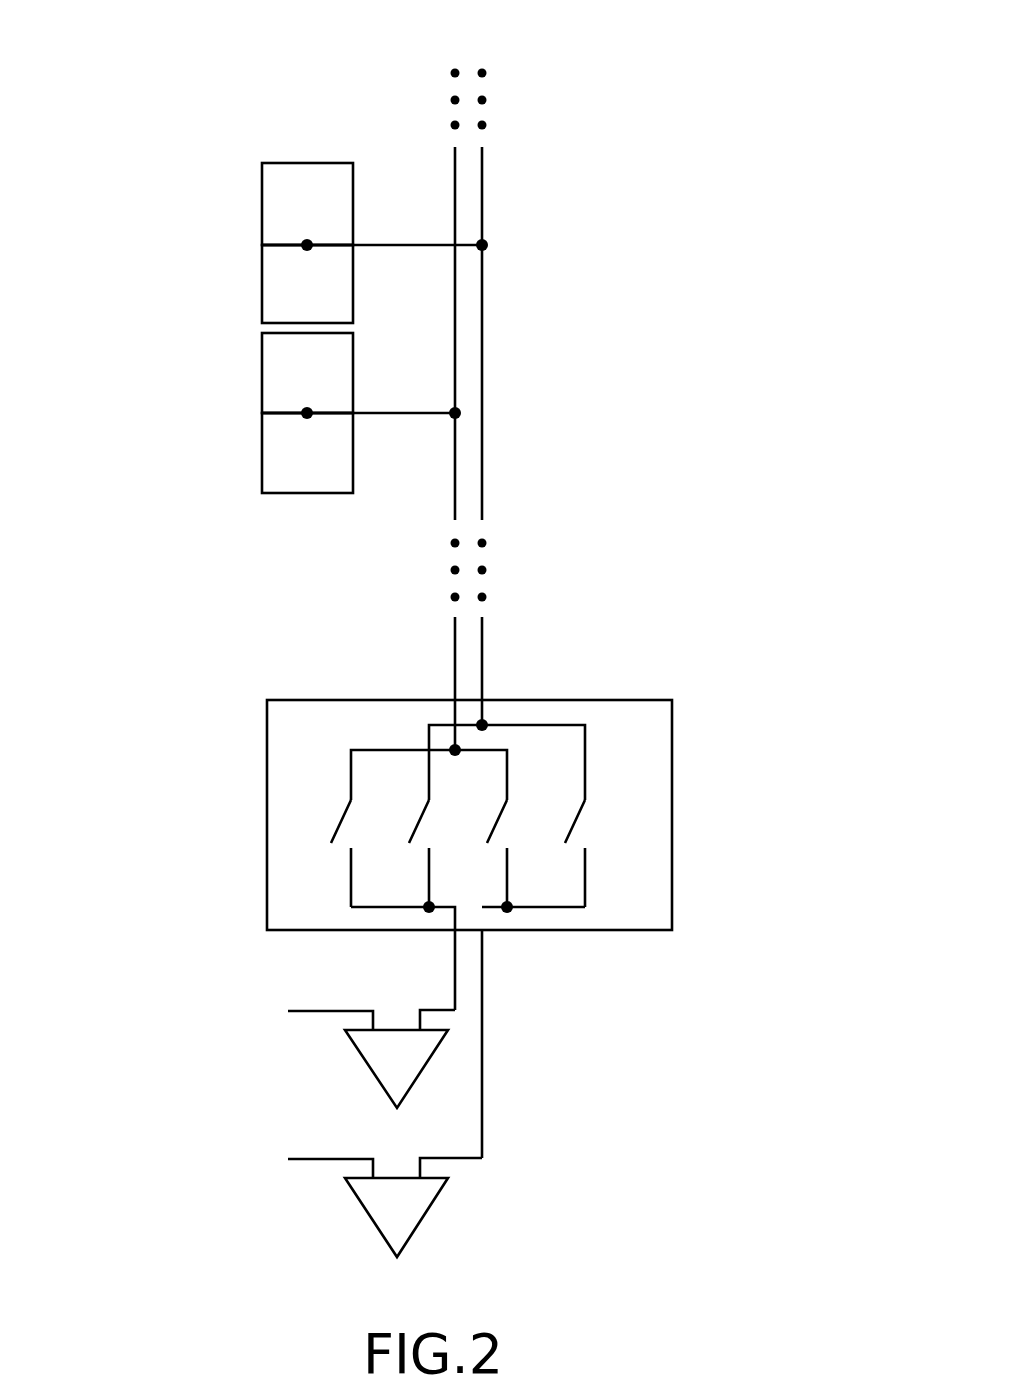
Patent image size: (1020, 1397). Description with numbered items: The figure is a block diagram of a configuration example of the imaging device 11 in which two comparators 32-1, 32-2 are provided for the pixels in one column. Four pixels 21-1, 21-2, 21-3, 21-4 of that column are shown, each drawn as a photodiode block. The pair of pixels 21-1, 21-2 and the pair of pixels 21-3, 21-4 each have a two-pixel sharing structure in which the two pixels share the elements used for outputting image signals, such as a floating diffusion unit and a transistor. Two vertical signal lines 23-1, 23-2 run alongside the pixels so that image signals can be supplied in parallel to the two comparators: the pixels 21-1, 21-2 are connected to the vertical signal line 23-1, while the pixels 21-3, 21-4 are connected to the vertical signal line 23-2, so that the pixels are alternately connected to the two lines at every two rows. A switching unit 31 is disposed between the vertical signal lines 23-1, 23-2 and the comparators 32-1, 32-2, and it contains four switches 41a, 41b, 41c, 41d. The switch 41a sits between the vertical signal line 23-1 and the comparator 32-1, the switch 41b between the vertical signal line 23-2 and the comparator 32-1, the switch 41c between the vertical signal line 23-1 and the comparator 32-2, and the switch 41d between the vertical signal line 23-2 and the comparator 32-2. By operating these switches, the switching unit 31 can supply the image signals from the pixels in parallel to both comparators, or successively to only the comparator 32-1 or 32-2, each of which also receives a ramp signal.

The imaging device 11 is at (658, 86).
The pixel 21-1 is at (262, 453).
The pixel 21-2 is at (262, 372).
The pixel 21-3 is at (262, 285).
The pixel 21-4 is at (262, 203).
The vertical signal line 23-1 is at (455, 657).
The vertical signal line 23-2 is at (484, 657).
The switching unit 31 is at (436, 929).
The switch 41a is at (342, 822).
The switch 41b is at (421, 822).
The switch 41c is at (499, 822).
The switch 41d is at (578, 822).
The comparator 32-1 is at (368, 1068).
The comparator 32-2 is at (368, 1216).